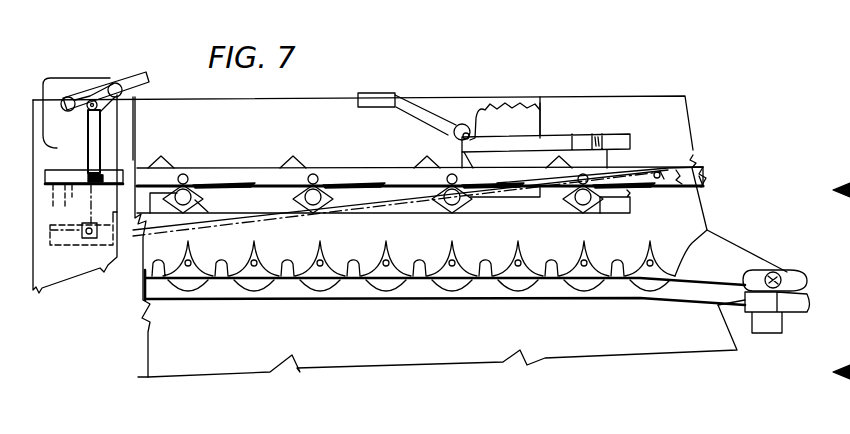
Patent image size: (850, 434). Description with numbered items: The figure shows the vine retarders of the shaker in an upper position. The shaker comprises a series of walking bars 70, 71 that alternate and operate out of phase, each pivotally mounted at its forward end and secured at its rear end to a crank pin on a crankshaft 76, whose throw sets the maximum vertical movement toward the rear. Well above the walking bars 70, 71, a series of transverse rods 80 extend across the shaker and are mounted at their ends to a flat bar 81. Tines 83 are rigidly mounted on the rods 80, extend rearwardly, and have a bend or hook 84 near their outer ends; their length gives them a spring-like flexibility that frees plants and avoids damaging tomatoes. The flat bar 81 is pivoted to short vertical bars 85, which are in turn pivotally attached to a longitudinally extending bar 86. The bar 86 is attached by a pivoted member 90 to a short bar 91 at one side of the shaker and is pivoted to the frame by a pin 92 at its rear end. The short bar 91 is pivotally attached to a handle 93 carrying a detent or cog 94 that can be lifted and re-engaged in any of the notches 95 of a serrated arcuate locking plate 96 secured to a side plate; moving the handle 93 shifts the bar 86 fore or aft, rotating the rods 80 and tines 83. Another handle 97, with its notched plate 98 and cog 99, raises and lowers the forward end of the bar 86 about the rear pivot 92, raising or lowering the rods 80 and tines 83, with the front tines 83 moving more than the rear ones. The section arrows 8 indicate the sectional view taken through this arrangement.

The section line 8- 8 is at (832, 281).
The walking bar 70 is at (727, 258).
The walking bar 71 is at (800, 305).
The crankshaft 76 is at (787, 272).
The transverse rod 80 is at (262, 207).
The flat bar 81 is at (523, 205).
The tine 83 is at (229, 168).
The bend or hook 84 is at (306, 201).
The short vertical bar 85 is at (290, 160).
The longitudinally extending bar 86 is at (338, 168).
The pivoted member 90 is at (632, 164).
The short bar 91 is at (575, 108).
The pin 92 is at (647, 188).
The handle 93 is at (393, 93).
The detent or cog 94 is at (462, 124).
The notch 95 is at (488, 104).
The serrated arcuate locking plate 96 is at (536, 95).
The handle 97 is at (126, 90).
The notched plate 98 is at (133, 128).
The cog 99 is at (148, 85).